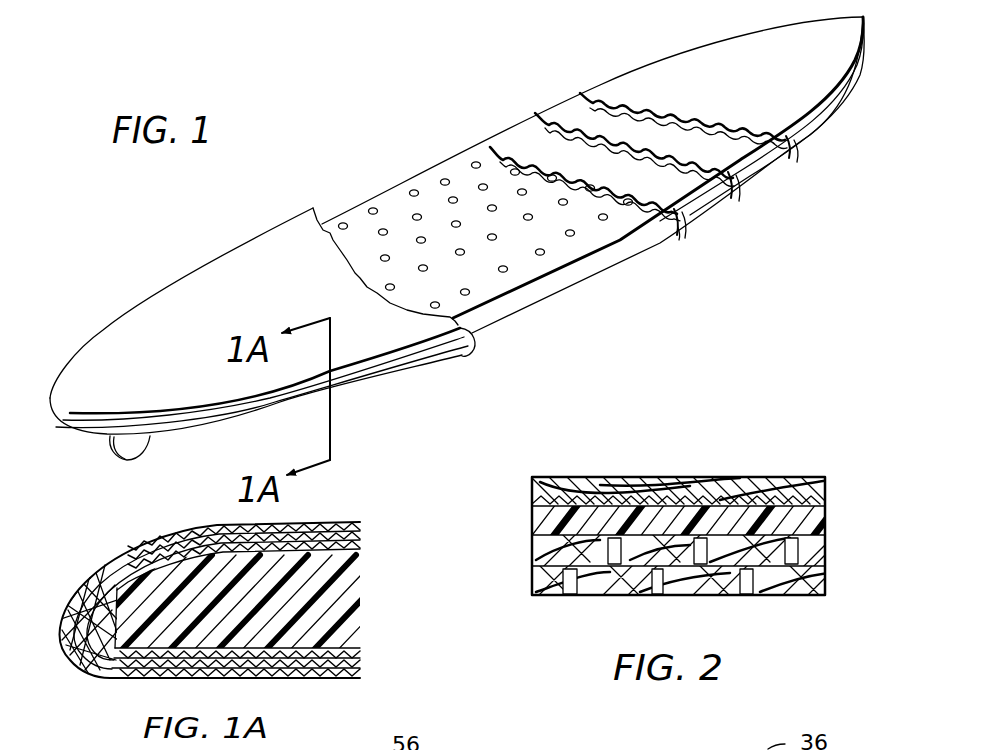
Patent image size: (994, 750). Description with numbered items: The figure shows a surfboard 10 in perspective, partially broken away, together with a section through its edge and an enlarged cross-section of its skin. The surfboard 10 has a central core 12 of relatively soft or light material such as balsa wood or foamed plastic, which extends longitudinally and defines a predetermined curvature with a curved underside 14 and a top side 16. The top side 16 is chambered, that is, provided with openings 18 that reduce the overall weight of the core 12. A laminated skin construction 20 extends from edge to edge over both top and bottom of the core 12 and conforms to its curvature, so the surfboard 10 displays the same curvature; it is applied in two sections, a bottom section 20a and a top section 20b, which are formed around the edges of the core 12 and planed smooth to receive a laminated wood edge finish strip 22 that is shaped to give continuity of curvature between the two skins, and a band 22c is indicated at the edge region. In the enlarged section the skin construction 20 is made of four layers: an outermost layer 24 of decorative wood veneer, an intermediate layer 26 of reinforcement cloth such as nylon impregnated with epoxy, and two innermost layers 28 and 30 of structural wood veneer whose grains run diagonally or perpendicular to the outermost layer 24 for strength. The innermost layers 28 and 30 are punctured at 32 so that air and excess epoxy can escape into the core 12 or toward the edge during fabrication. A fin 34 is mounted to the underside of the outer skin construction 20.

In FIG. 1, the surfboard 10 is at (315, 158).
In FIG. 1, the central core 12 is at (609, 279).
In FIG. 1, the curved underside 14 is at (570, 303).
In FIG. 1, the top side 16 is at (457, 170).
In FIG. 1, the openings 18 is at (411, 190).
In FIG. 1, the laminated skin construction 20 is at (544, 98).
In FIG. 2, the laminated skin construction 20 is at (526, 617).
In FIG. 1A, the bottom section 20a is at (307, 523).
In FIG. 1A, the top section 20b is at (295, 678).
In FIG. 1A, the laminated wood edge finish strip 22 is at (92, 678).
In FIG. 1, the rail band segment 22c is at (686, 219).
In FIG. 1A, the outermost layer 24 is at (340, 523).
In FIG. 2, the outermost layer 24 is at (533, 493).
In FIG. 1A, the intermediate layer 26 is at (213, 529).
In FIG. 2, the intermediate layer 26 is at (533, 512).
In FIG. 1A, the innermost layer 28 is at (163, 550).
In FIG. 2, the innermost layer 28 is at (533, 553).
In FIG. 1A, the innermost layer 30 is at (113, 558).
In FIG. 2, the innermost layer 30 is at (533, 585).
In FIG. 2, the punctures 32 is at (657, 597).
In FIG. 1, the fin 34 is at (140, 452).